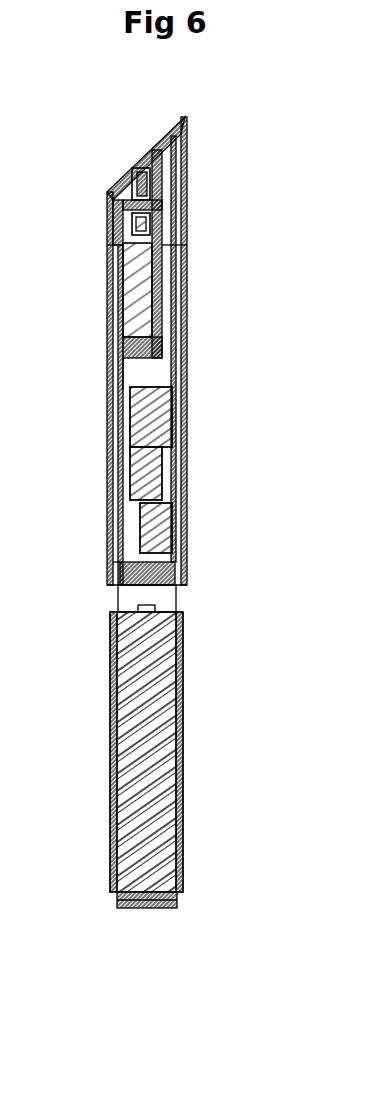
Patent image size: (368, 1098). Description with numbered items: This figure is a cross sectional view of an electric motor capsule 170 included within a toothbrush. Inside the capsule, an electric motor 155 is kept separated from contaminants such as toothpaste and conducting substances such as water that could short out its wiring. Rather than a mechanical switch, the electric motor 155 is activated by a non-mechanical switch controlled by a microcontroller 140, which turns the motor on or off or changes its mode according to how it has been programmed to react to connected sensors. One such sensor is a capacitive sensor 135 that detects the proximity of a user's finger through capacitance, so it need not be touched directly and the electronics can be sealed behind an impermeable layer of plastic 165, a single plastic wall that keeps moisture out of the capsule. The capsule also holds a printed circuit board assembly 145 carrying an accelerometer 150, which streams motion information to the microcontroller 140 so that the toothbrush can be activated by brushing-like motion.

The capacitive sensor 135 is at (189, 160).
The microcontroller 140 is at (183, 398).
The printed circuit board (PCB) assembly 145 is at (183, 358).
The accelerometer 150 is at (183, 510).
The electric motor 155 is at (188, 258).
The impermeable layer of plastic 165 is at (150, 150).
The electric motor capsule 170 is at (110, 413).